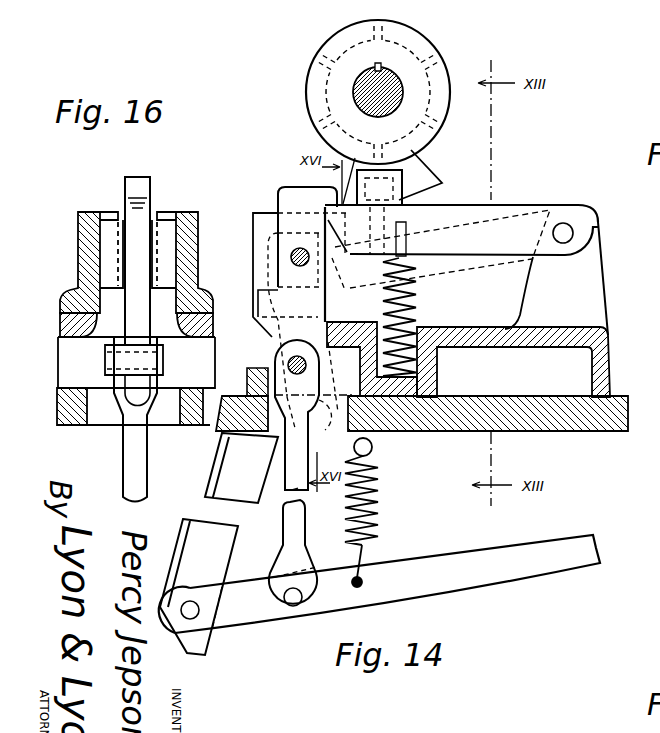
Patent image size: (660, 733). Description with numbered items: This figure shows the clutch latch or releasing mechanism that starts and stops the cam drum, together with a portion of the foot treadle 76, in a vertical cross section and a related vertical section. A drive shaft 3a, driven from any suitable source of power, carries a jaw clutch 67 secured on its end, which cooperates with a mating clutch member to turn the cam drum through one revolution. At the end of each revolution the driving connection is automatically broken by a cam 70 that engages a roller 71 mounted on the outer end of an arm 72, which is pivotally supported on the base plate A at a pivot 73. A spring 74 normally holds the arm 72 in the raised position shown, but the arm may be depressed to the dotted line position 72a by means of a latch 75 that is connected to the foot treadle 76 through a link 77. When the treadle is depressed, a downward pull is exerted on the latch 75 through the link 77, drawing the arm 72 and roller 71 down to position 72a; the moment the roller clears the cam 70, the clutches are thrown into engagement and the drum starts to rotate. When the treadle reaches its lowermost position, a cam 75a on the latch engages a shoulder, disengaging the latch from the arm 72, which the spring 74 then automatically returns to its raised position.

In FIG. 14, the jaw clutch 67 is at (308, 75).
In FIG. 14, the drive shaft 3a is at (398, 103).
In FIG. 14, the cam 70 is at (424, 157).
In FIG. 14, the roller 71 is at (402, 188).
In FIG. 14, the arm 72 is at (510, 213).
In FIG. 14, the dotted line position of arm 72a is at (468, 268).
In FIG. 14, the pivot 73 is at (573, 233).
In FIG. 14, the spring 74 is at (418, 313).
In FIG. 14, the latch 75 is at (285, 190).
In FIG. 16, the latch 75 is at (151, 183).
In FIG. 14, the cam on latch 75a is at (262, 298).
In FIG. 14, the foot treadle 76 is at (252, 372).
In FIG. 14, the link 77 is at (288, 522).
In FIG. 16, the link 77 is at (124, 466).
In FIG. 14, the base plate A is at (603, 368).